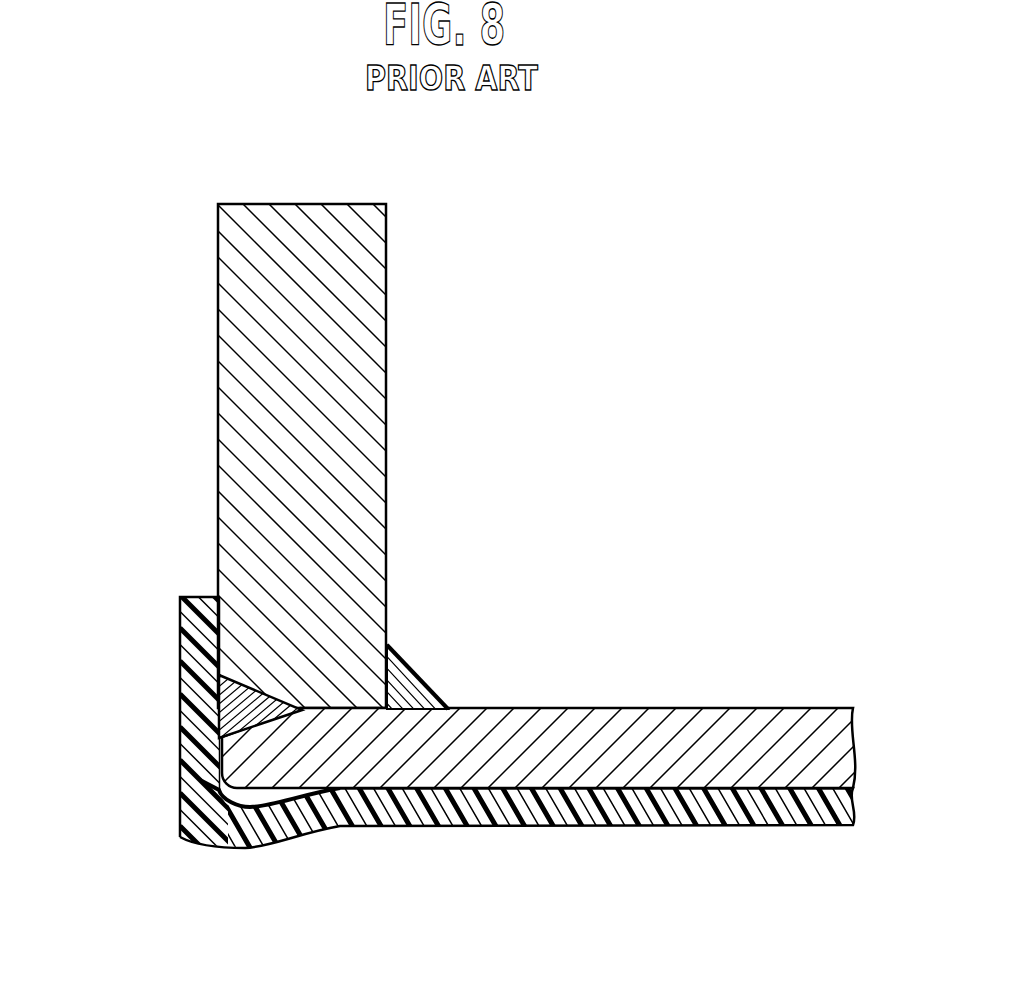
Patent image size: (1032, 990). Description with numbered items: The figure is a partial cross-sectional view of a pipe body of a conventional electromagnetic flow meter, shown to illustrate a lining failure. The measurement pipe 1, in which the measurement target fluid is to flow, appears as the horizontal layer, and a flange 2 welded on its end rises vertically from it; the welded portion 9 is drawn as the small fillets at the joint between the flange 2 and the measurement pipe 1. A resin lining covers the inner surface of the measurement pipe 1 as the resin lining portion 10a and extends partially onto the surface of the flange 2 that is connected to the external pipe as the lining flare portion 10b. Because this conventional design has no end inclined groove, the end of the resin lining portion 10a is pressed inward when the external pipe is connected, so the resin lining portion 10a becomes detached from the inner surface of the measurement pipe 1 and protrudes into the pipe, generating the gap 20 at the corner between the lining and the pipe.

The measurement pipe 1 is at (621, 707).
The flange 2 is at (386, 323).
The welded portion 9 is at (248, 710).
The resin lining portion 10a is at (750, 826).
The lining flare portion 10b is at (181, 633).
The gap 20 is at (252, 797).